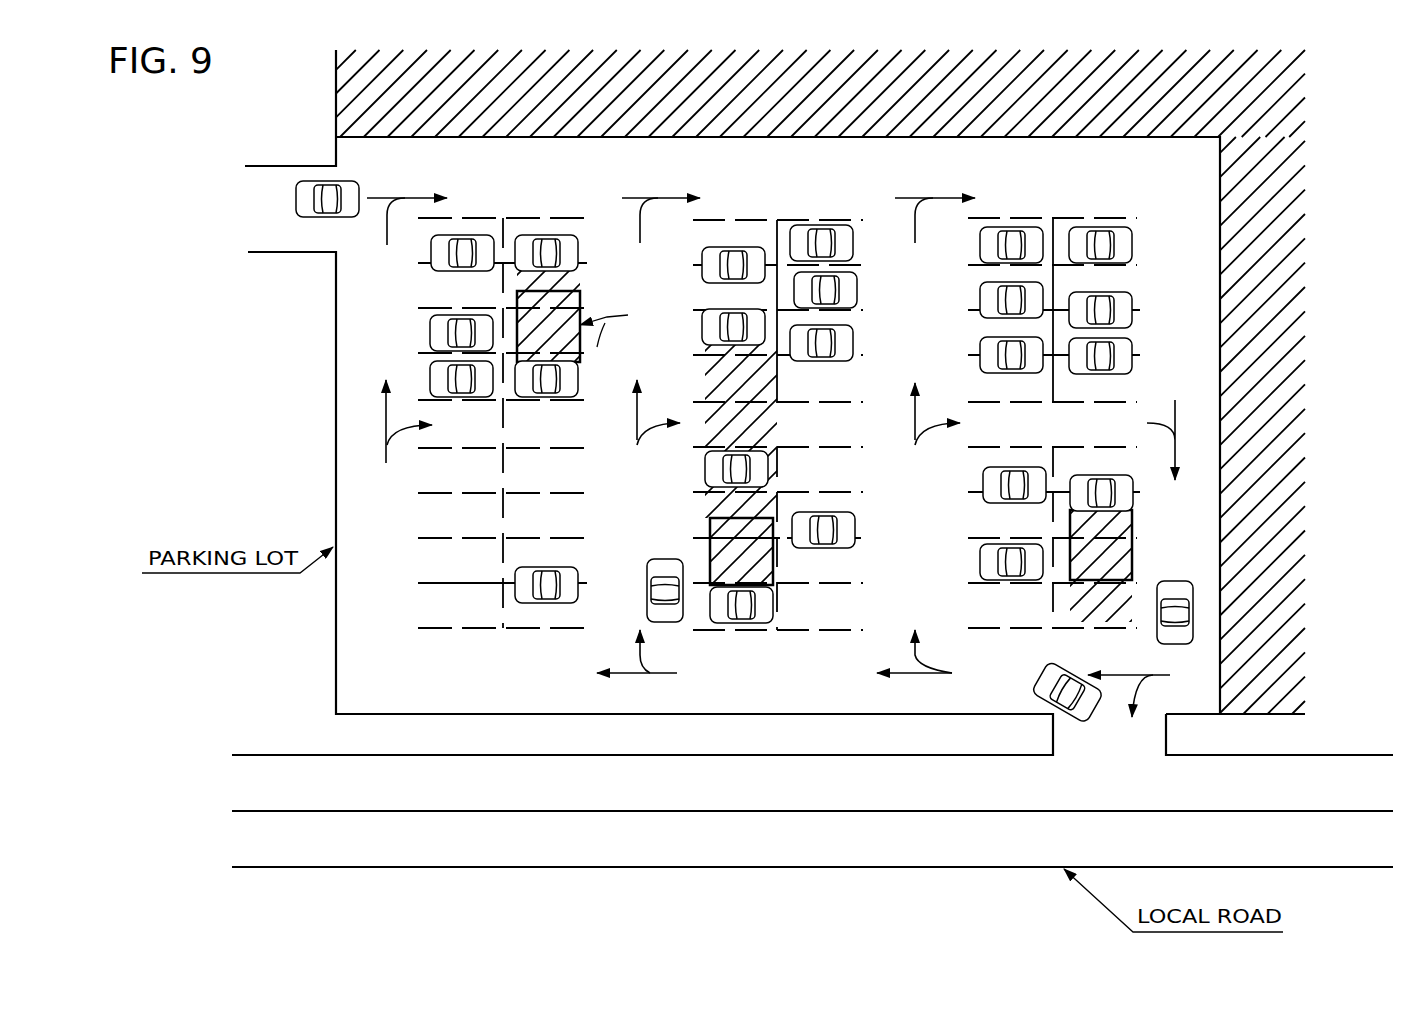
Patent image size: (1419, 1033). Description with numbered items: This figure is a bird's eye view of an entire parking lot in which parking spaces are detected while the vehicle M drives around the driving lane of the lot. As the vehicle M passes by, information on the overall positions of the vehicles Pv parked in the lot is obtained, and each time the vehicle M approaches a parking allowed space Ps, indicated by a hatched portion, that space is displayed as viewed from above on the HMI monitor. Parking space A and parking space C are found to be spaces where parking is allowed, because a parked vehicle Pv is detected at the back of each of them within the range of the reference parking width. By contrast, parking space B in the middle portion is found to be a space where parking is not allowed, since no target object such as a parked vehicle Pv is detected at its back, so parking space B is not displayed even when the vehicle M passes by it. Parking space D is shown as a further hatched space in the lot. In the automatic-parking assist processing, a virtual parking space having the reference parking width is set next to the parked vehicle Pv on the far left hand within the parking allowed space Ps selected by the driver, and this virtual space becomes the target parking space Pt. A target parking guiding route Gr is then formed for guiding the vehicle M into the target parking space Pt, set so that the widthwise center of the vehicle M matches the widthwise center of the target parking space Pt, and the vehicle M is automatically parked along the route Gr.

The parking allowed space Ps is at (517, 307).
The target parking space Pt is at (520, 323).
The parked vehicle Pv is at (703, 328).
The parking space C is at (577, 290).
The target parking guiding route Gr is at (614, 333).
The parking space B is at (705, 380).
The parking space A is at (718, 508).
The parking area D is at (1065, 607).
The vehicle M is at (647, 583).